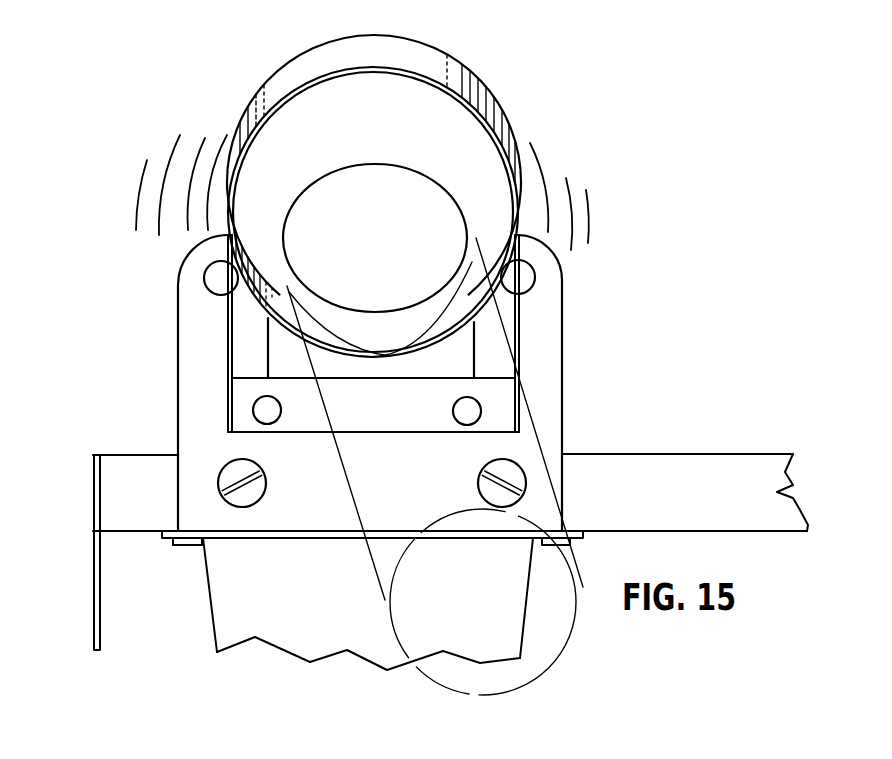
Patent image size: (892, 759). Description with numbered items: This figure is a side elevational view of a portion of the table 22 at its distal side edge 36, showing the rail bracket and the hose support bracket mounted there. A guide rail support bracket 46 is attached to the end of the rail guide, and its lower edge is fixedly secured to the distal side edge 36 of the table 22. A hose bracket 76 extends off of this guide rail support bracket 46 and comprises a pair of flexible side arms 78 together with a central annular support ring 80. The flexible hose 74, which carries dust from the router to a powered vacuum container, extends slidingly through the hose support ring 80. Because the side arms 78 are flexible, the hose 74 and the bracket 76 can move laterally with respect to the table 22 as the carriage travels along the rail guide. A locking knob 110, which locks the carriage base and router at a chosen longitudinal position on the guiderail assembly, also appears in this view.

The table 22 is at (725, 472).
The distal side edge 36 is at (778, 491).
The guide rail support bracket 46 is at (550, 316).
The flexible hose 74 is at (548, 451).
The hose bracket 76 is at (524, 186).
The flexible side arms 78 is at (230, 351).
The central annular support ring 80 is at (503, 118).
The locking knob 110 is at (93, 530).